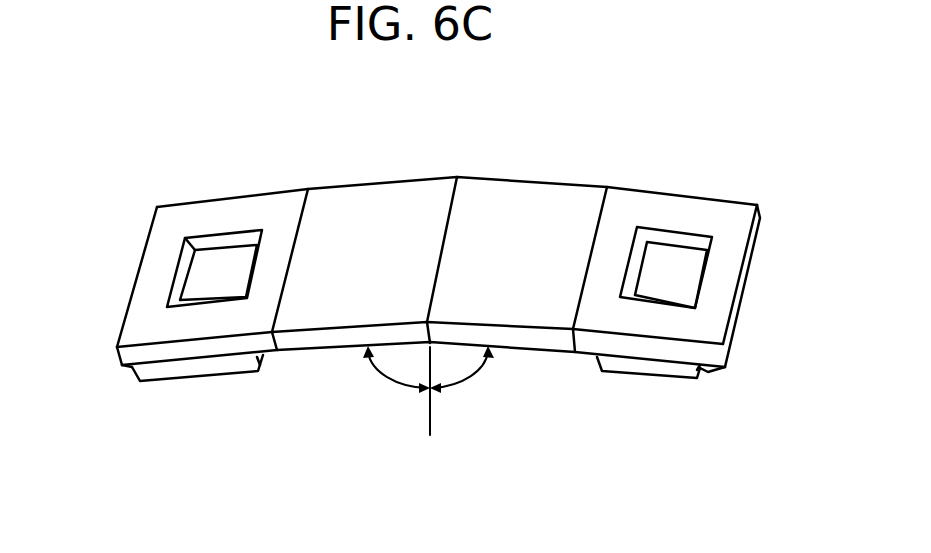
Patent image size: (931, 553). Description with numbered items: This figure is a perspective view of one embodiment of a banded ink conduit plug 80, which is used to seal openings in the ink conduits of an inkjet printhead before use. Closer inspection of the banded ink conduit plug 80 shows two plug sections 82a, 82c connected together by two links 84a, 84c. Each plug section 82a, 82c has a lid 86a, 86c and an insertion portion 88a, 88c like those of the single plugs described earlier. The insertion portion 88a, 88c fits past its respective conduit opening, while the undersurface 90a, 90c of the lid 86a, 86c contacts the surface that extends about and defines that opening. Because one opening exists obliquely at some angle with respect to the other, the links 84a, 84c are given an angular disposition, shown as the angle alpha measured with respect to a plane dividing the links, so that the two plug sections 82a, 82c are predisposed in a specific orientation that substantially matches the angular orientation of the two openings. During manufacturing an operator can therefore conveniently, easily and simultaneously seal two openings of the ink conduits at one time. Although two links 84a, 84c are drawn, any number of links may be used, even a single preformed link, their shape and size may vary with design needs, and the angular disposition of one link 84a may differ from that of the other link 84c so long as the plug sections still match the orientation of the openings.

The banded ink conduit plug 80 is at (203, 166).
The plug section 82a is at (250, 197).
The plug section 82c is at (667, 188).
The link 84a is at (367, 180).
The link 84c is at (537, 181).
The lid 86a is at (117, 355).
The lid 86c is at (727, 338).
The insertion portion 88a is at (197, 378).
The insertion portion 88c is at (673, 380).
The undersurface of the lid 90a is at (127, 367).
The undersurface of the lid 90c is at (708, 372).